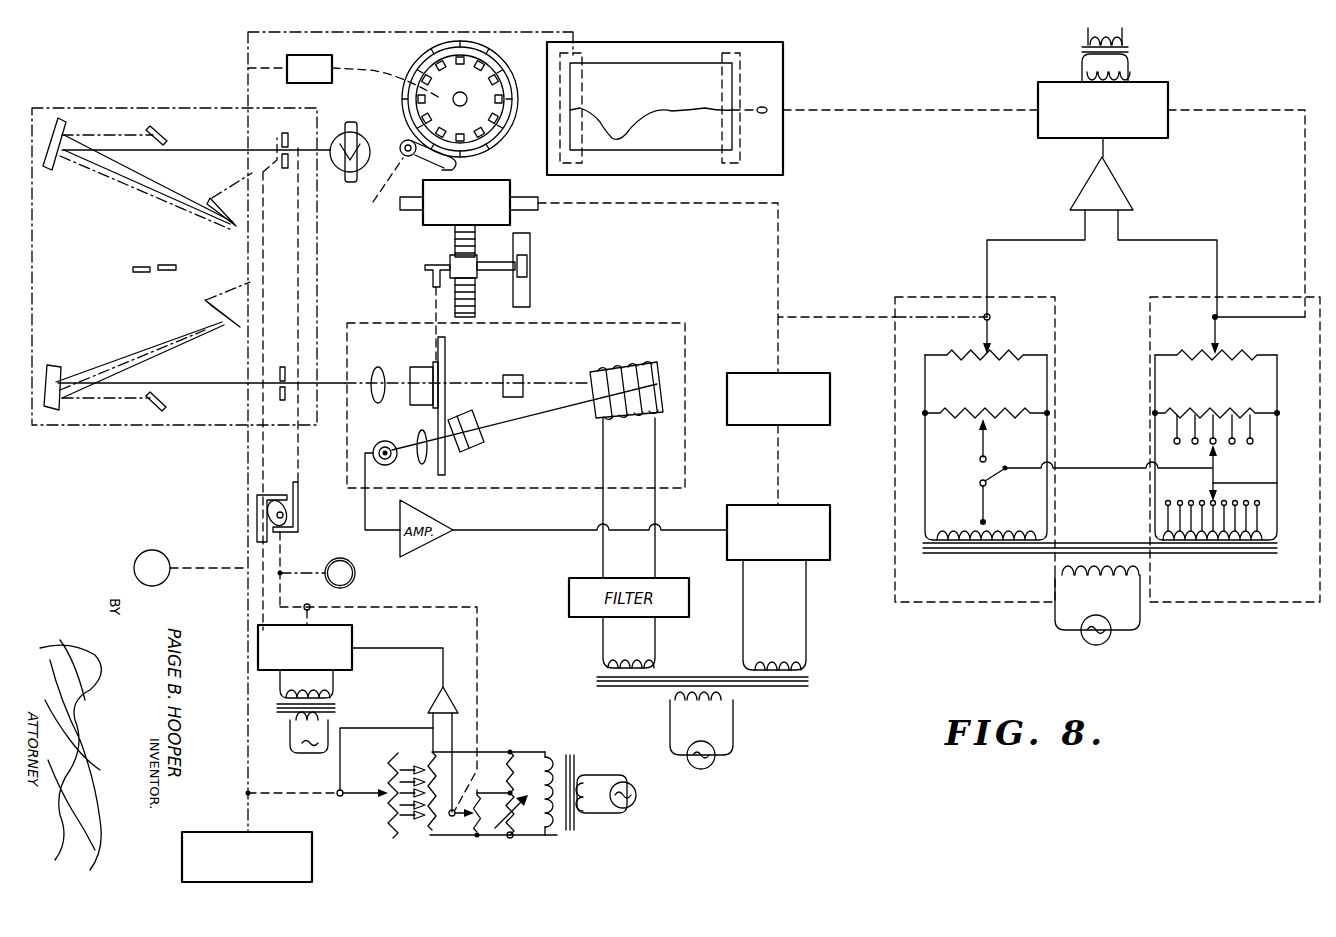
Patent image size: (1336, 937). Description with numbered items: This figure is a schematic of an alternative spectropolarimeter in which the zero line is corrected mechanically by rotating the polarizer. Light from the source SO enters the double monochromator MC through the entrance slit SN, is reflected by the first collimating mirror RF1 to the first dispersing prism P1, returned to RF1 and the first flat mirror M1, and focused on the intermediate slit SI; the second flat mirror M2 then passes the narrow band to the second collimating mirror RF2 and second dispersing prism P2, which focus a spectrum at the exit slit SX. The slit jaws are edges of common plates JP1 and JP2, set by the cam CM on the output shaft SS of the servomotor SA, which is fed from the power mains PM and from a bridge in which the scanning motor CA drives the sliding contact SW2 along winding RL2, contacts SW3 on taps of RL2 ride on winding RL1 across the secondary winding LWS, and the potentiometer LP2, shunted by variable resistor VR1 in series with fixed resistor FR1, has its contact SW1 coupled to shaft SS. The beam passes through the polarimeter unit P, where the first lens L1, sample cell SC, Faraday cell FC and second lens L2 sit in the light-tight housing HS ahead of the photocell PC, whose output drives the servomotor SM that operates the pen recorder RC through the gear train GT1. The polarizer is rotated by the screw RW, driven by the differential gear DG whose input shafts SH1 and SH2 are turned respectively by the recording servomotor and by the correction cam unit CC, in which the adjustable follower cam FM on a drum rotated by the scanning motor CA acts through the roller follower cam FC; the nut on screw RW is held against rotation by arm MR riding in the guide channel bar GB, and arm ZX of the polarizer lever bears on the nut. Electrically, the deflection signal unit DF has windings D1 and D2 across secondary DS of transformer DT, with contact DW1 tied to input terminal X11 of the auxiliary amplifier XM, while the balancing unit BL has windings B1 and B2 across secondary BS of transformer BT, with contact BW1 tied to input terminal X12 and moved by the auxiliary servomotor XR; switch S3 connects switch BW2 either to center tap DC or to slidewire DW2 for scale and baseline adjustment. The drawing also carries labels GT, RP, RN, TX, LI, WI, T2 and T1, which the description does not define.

The monochromator MC is at (122, 108).
The first collimating mirror RF1 is at (58, 168).
The first flat mirror M1 is at (168, 134).
The first dispersing prism P1 is at (236, 226).
The intermediate slit SI is at (152, 270).
The second dispersing prism P2 is at (204, 299).
The second collimating mirror RF2 is at (58, 365).
The second flat mirror M2 is at (165, 403).
The entrance slit SN is at (279, 148).
The exit slit SX is at (280, 374).
The gear train GT is at (344, 76).
The center tap DC is at (530, 60).
The adjustable follower cam FM is at (419, 82).
The correction cam unit CC is at (398, 103).
The source SO is at (350, 172).
The modulator Faraday cell FC is at (432, 170).
The differential gear DG is at (510, 216).
The first input shaft SH1 is at (522, 200).
The second input shaft SH2 is at (405, 208).
The screw RW is at (455, 243).
The arm MR is at (516, 272).
The guide channel bar GB is at (530, 292).
The arm ZX is at (425, 268).
The pen recorder RC is at (781, 73).
The recording paper RP is at (633, 75).
The recorded trace / pen RN is at (716, 108).
The light-tight housing HS is at (620, 322).
The polarimeter unit P is at (571, 326).
The first lens L1 is at (386, 350).
The photocell PC is at (395, 464).
The second lens L2 is at (416, 436).
The sample cell SC is at (515, 375).
The first gear train GT1 is at (799, 426).
The servomotor SM is at (830, 556).
The transformer TX is at (1140, 48).
The auxiliary servomotor XR is at (1168, 98).
The auxiliary amplifier XM is at (1118, 174).
The input terminal X11 is at (1085, 225).
The input terminal X12 is at (1118, 225).
The deflection signal unit DF is at (958, 297).
The balancing unit BL is at (1262, 275).
The potentiometer winding D1 is at (986, 431).
The contact DW1 is at (983, 333).
The potentiometer winding D2 is at (946, 412).
The slidewire contact DW2 is at (981, 441).
The switch S3 is at (993, 469).
The secondary winding DS is at (950, 525).
The transformer DT is at (932, 542).
The potentiometer winding B1 is at (1192, 354).
The contact BW1 is at (1221, 335).
The potentiometer winding B2 is at (1199, 413).
The switch contact BW2 is at (1215, 465).
The secondary winding BS is at (1262, 512).
The transformer BT is at (1268, 540).
The wavelength indicator LI is at (191, 568).
The common plate JP2 is at (257, 518).
The common plate JP1 is at (312, 478).
The cam CM is at (284, 517).
The wavelength indicator WI is at (317, 573).
The output shaft SS is at (281, 596).
The servomotor SA is at (352, 633).
The power mains PM is at (312, 679).
The transformer T2 is at (278, 712).
The scanning motor CA is at (230, 830).
The sliding contact SW2 is at (360, 797).
The second potentiometer winding RL2 is at (393, 769).
The potentiometer winding RL1 is at (434, 754).
The contacts SW3 is at (404, 812).
The contact SW1 is at (457, 818).
The second potentiometer LP2 is at (480, 789).
The fixed resistor FR1 is at (514, 776).
The variable resistor VR1 is at (514, 830).
The secondary winding LWS is at (549, 759).
The transformer T1 is at (579, 820).